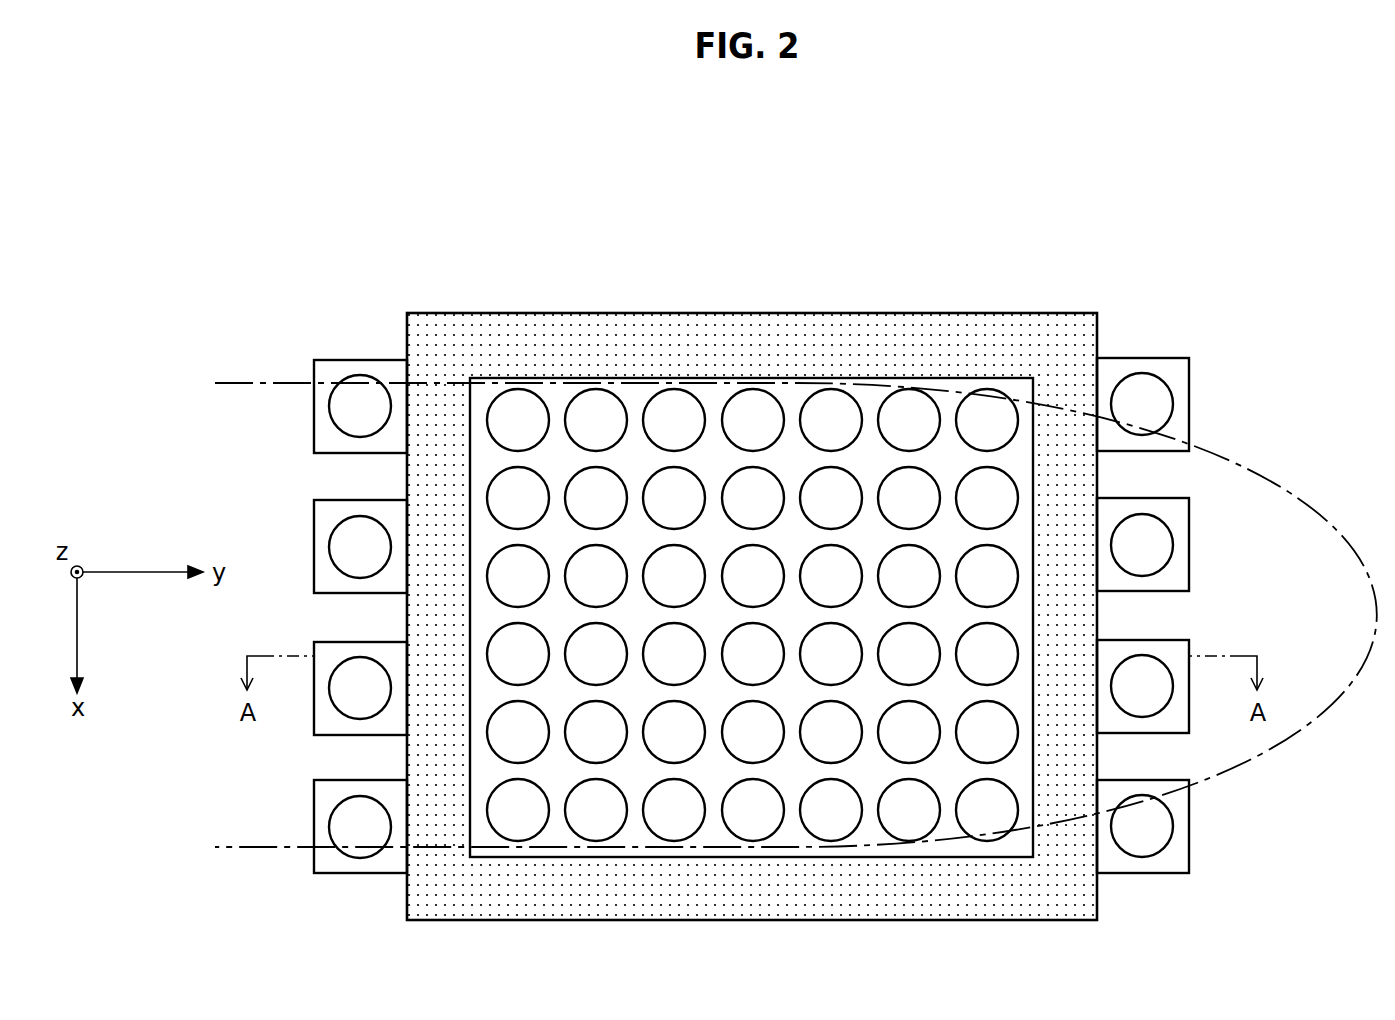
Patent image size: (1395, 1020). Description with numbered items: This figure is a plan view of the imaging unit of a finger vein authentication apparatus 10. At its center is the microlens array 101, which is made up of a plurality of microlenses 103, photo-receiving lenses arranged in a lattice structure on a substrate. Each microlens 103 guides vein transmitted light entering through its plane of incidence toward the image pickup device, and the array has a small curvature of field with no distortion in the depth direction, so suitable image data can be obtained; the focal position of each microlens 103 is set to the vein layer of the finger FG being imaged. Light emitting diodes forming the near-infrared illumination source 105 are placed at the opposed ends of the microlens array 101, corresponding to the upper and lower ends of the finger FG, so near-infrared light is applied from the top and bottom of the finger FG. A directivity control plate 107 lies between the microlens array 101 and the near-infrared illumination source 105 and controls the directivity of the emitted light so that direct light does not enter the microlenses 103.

The finger vein authentication apparatus 10 is at (732, 181).
The microlens array 101 is at (798, 353).
The microlens 103 is at (670, 412).
The near-infrared illumination source 105 is at (358, 360).
The directivity control plate 107 is at (1040, 312).
The finger FG is at (1263, 476).